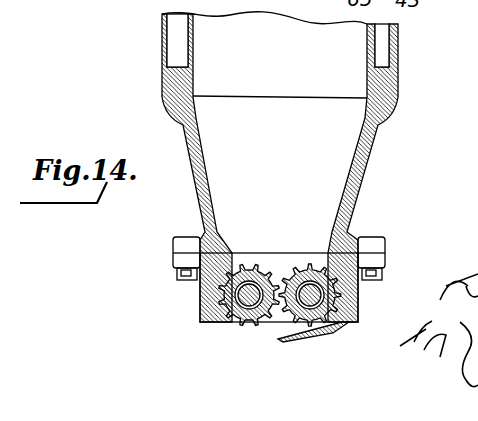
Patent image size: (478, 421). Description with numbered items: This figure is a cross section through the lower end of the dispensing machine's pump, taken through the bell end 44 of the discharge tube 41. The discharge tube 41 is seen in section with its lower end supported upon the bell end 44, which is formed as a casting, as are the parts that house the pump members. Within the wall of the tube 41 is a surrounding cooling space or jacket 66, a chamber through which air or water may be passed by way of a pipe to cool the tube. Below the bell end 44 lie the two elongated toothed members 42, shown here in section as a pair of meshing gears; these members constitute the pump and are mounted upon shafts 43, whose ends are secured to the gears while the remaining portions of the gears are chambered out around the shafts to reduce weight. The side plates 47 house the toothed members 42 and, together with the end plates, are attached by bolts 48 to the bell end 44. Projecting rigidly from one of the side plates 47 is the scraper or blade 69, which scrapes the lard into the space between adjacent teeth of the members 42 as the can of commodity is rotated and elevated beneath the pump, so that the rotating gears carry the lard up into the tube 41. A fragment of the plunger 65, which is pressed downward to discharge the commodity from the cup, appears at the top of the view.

The discharge tube 41 is at (167, 52).
The elongated toothed members 42 is at (286, 320).
The shafts 43 is at (227, 320).
The bell end 44 is at (273, 167).
The side plates 47 is at (206, 305).
The bolts 48 is at (176, 279).
The plunger 65 is at (359, 5).
The cooling space or jacket 66 is at (170, 52).
The scraper or blade 69 is at (312, 334).